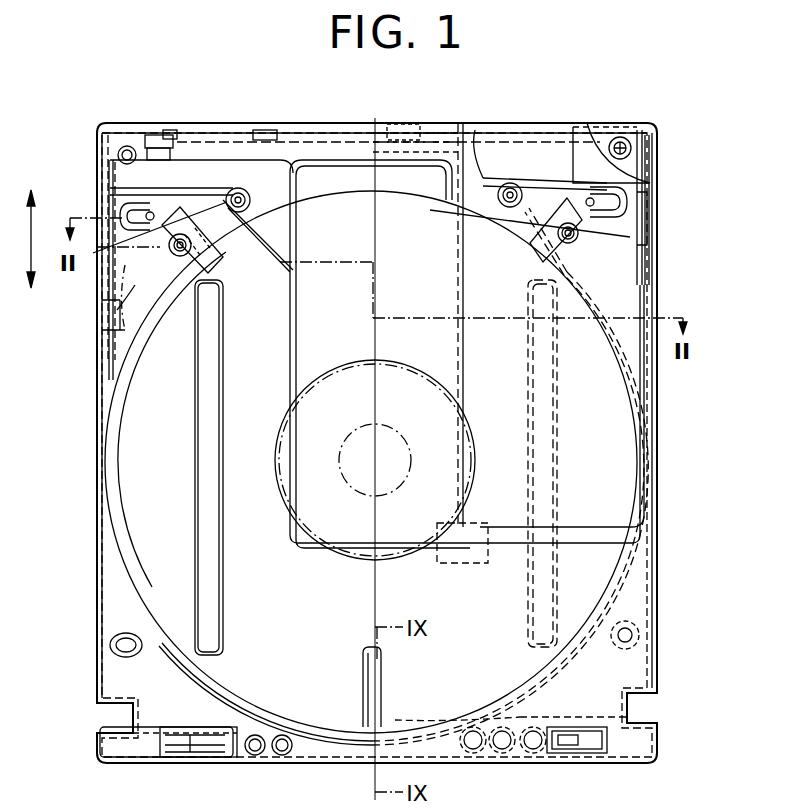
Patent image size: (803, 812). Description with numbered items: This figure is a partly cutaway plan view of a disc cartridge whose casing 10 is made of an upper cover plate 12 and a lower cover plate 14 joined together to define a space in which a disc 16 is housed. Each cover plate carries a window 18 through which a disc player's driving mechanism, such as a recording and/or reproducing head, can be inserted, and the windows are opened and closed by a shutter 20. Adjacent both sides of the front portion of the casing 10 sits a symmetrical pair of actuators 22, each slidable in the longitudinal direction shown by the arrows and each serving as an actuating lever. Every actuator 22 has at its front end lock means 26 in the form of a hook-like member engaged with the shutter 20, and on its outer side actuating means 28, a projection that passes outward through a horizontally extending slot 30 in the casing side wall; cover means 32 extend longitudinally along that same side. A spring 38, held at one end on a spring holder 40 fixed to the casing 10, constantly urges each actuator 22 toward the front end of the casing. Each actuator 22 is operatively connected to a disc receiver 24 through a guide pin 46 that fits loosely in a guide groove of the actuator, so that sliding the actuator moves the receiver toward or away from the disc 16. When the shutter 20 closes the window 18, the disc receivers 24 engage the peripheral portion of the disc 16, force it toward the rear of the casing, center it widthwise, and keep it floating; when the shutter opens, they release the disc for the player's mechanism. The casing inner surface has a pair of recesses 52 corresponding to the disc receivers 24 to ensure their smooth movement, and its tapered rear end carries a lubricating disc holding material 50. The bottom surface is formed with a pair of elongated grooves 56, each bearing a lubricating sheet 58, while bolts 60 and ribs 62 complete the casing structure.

The casing 10 is at (663, 120).
The upper cover plate 12 is at (653, 600).
The lower cover plate 14 is at (115, 680).
The disc 16 is at (118, 517).
The window 18 is at (418, 130).
The shutter 20 is at (447, 370).
The actuator 22 is at (117, 200).
The disc receiver 24 is at (227, 253).
The lock means 26 is at (173, 130).
The actuating means 28 is at (100, 212).
The slot 30 is at (103, 280).
The cover means 32 is at (117, 300).
The spring 38 is at (217, 190).
The spring holder 40 is at (509, 180).
The guide pin 46 is at (181, 256).
The disc holding material 50 is at (363, 683).
The recess 52 is at (222, 262).
The elongated groove 56 is at (195, 492).
The sheet 58 is at (195, 449).
The bolt 60 is at (620, 136).
The rib 62 is at (123, 340).